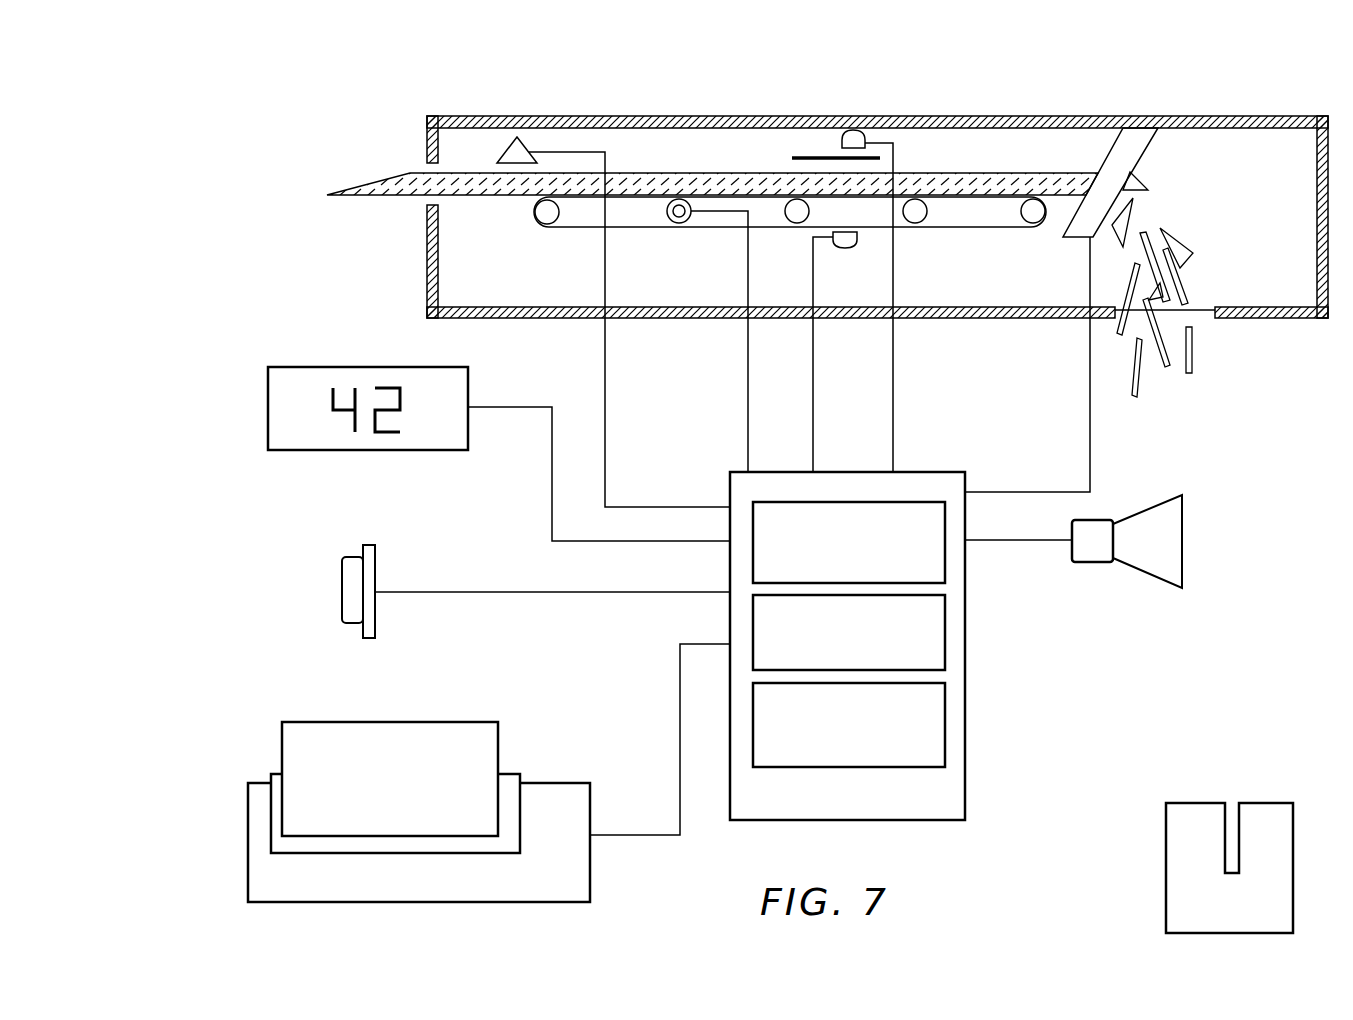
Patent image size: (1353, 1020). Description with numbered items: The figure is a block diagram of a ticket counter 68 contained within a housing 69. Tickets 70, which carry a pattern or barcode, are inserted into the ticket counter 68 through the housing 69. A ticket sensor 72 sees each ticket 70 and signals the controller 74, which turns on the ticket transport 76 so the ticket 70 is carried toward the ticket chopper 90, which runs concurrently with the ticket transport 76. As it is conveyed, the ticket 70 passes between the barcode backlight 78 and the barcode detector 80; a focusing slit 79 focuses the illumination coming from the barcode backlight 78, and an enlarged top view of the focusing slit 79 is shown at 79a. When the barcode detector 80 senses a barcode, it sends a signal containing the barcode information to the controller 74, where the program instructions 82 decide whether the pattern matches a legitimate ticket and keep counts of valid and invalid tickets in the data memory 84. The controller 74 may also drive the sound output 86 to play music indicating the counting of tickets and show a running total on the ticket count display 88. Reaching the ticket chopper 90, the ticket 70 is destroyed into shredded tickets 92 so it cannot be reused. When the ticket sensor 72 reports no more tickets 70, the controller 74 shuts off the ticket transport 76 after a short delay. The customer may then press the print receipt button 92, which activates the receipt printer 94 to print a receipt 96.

The ticket counter 68 is at (298, 216).
The housing 69 is at (428, 290).
The tickets 70 is at (377, 182).
The ticket sensor 72 is at (500, 152).
The controller 74 is at (888, 646).
The ticket transport 76 is at (535, 213).
The barcode backlight 78 is at (842, 141).
The focusing slit 79 is at (792, 158).
The enlarged/top view of the focusing slit 79a is at (1166, 832).
The barcode detector 80 is at (849, 249).
The program instructions 82 is at (945, 715).
The data memory 84 is at (932, 615).
The sound output 86 is at (1182, 532).
The ticket count display 88 is at (268, 405).
The ticket chopper 90 is at (1104, 165).
The shredded tickets / print receipt button 92 is at (1175, 245).
The receipt printer 94 is at (249, 782).
The receipt 96 is at (498, 752).